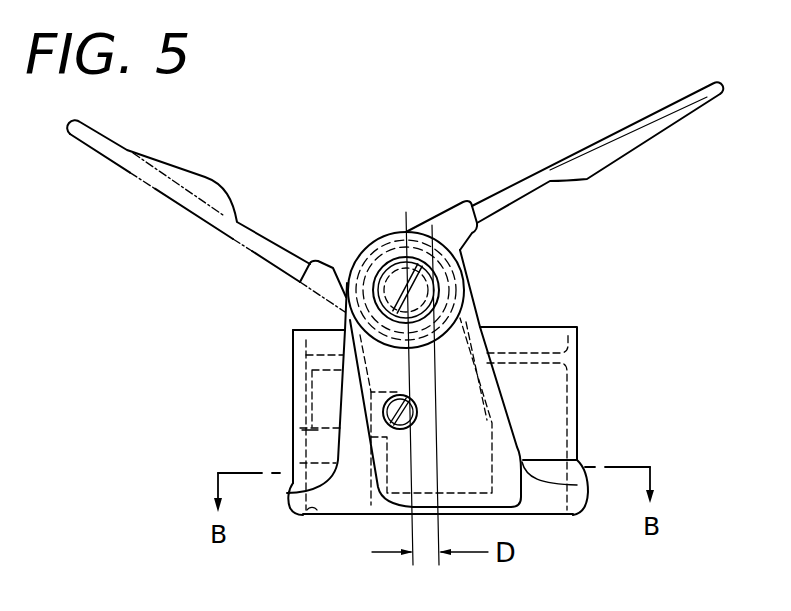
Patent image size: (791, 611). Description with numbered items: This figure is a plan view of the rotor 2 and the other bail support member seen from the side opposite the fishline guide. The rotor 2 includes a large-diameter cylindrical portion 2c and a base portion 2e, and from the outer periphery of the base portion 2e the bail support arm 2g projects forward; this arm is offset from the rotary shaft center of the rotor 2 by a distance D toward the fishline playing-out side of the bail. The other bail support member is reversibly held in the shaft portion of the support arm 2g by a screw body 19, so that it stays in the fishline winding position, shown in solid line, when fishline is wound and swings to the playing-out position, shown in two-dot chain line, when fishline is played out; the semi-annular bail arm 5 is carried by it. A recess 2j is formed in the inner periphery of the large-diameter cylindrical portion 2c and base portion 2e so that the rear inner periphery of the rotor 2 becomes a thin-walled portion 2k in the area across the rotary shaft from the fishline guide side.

The rotor 2 is at (438, 418).
The large-diameter cylindrical portion 2c is at (578, 346).
The base portion 2e is at (556, 513).
The bail support arm 2g is at (470, 298).
The recess 2j is at (312, 517).
The thin-walled portion 2k is at (300, 444).
The semi-annular bail arm 5 is at (577, 155).
The screw body 19 is at (382, 270).